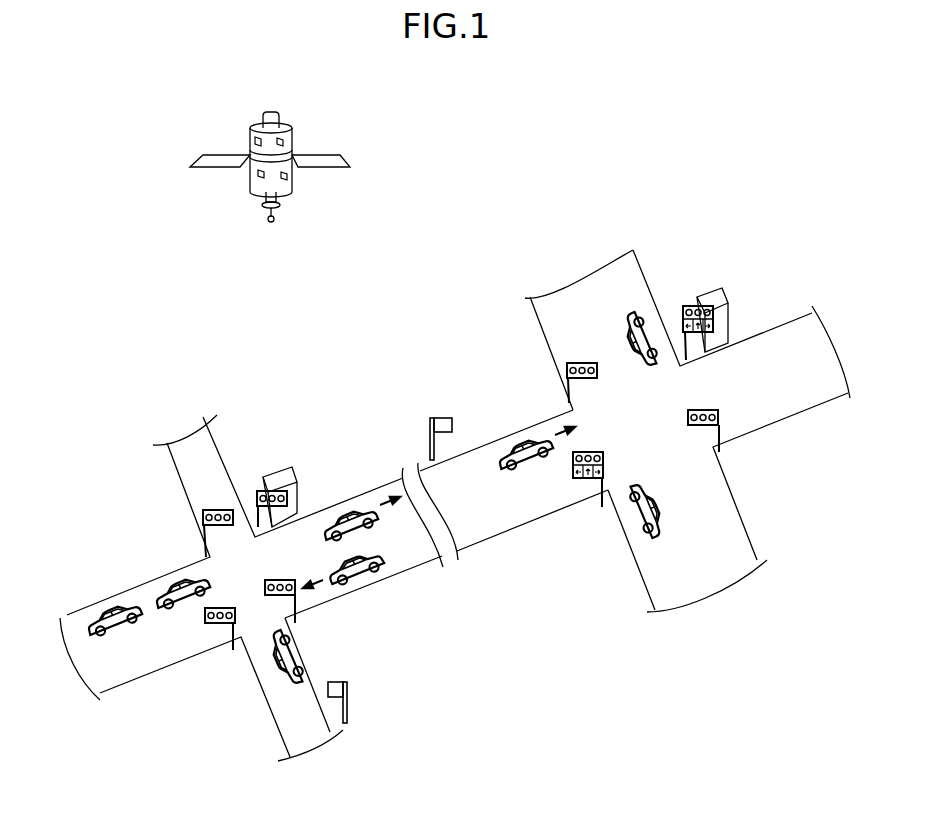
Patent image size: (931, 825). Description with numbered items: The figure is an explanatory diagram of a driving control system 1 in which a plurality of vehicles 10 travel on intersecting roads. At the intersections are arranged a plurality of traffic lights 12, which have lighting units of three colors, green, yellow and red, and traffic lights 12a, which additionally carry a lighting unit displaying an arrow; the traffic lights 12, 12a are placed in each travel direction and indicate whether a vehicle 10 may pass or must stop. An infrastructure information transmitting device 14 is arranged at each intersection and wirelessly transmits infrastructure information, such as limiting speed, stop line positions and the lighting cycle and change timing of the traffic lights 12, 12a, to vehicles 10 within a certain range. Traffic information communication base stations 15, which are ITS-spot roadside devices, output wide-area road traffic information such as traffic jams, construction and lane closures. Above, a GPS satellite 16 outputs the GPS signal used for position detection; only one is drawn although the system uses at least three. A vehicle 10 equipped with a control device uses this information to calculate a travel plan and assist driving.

The driving control system 1 is at (168, 290).
The vehicle 10 is at (634, 318).
The traffic light 12 is at (566, 368).
The traffic light with arrow light 12a is at (688, 304).
The infrastructure information transmitting device 14 is at (270, 465).
The traffic information communication base station 15 is at (433, 419).
The GPS satellite 16 is at (290, 180).